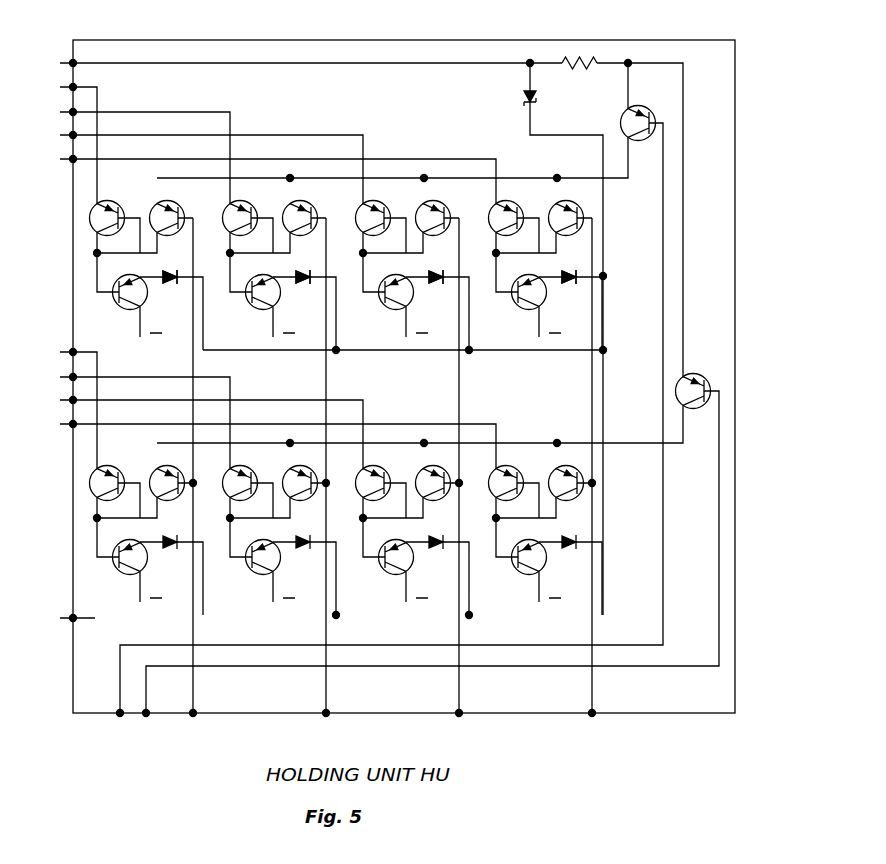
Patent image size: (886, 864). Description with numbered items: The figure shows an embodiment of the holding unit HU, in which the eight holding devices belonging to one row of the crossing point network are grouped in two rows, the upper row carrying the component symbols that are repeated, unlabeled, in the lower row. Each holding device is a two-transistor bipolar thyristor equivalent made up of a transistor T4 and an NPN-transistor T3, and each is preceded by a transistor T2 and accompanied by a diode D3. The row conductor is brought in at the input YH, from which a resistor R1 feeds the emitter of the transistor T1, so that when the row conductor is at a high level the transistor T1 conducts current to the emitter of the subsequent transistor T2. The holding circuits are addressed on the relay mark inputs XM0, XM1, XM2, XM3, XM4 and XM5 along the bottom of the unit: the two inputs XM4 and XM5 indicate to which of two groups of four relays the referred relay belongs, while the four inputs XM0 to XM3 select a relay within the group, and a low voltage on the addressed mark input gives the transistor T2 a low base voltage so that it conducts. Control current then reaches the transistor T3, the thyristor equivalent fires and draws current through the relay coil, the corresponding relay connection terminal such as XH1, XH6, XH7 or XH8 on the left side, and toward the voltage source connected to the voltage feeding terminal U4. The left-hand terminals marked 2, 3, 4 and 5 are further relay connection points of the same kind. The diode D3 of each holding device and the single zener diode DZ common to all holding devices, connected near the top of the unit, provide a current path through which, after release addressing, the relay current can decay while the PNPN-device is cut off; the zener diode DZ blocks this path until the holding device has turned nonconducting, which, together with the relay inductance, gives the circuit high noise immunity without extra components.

The holding unit HU is at (705, 40).
The transistor T4 is at (513, 194).
The transistor T2 is at (585, 200).
The NPN-transistor T3 is at (512, 313).
The diode D3 is at (568, 291).
The transistor T1 is at (645, 106).
The resistor R1 is at (564, 70).
The Zener diode DZ is at (548, 103).
The input YH is at (357, 215).
The relay connection terminal XH8 is at (58, 140).
The input line 2 is at (35, 145).
The input line 4 is at (204, 165).
The relay connection terminal XH6 is at (257, 176).
The relay connection terminal XH1 is at (59, 405).
The input line 3 is at (35, 410).
The input line 5 is at (204, 429).
The relay connection terminal XH7 is at (258, 441).
The voltage feeding terminal U4 is at (64, 618).
The relay mark input XM0 is at (202, 483).
The relay mark input XM1 is at (323, 483).
The relay mark input XM2 is at (455, 483).
The relay mark input XM3 is at (592, 720).
The relay mark input XM4 is at (120, 720).
The relay mark input XM5 is at (425, 570).